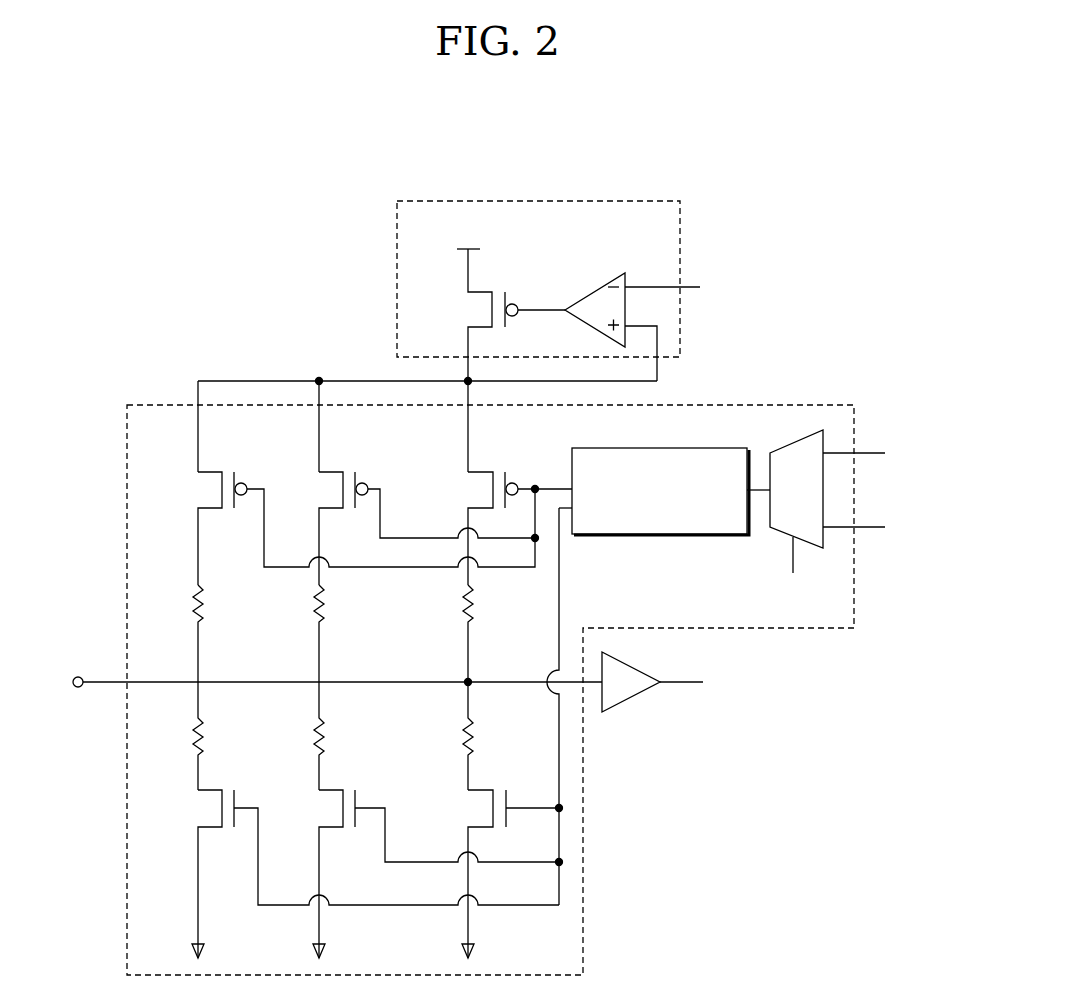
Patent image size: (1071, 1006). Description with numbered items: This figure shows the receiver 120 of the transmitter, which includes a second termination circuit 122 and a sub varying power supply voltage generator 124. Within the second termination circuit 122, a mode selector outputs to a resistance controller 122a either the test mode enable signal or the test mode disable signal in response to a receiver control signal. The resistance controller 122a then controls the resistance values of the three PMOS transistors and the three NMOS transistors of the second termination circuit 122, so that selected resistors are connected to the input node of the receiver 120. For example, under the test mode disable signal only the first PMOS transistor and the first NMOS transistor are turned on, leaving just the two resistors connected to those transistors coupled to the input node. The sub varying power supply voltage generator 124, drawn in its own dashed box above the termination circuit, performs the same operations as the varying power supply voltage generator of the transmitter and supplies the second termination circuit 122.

The receiver 120 is at (822, 153).
The second termination circuit 122 is at (583, 913).
The resistance controller 122a is at (636, 448).
The sub varying power supply voltage generator 124 is at (636, 201).